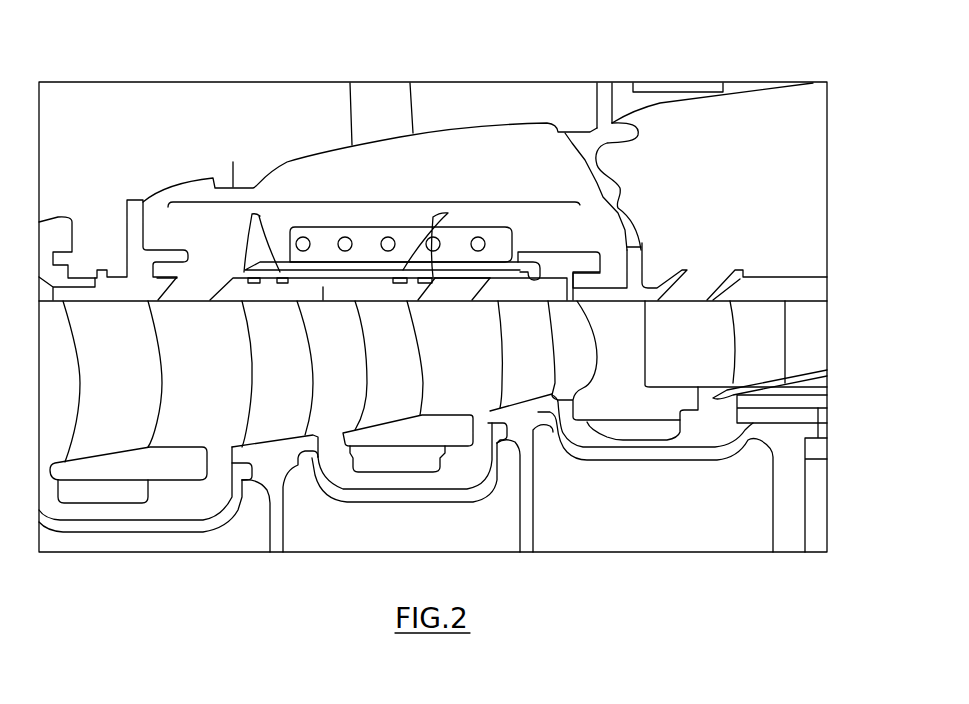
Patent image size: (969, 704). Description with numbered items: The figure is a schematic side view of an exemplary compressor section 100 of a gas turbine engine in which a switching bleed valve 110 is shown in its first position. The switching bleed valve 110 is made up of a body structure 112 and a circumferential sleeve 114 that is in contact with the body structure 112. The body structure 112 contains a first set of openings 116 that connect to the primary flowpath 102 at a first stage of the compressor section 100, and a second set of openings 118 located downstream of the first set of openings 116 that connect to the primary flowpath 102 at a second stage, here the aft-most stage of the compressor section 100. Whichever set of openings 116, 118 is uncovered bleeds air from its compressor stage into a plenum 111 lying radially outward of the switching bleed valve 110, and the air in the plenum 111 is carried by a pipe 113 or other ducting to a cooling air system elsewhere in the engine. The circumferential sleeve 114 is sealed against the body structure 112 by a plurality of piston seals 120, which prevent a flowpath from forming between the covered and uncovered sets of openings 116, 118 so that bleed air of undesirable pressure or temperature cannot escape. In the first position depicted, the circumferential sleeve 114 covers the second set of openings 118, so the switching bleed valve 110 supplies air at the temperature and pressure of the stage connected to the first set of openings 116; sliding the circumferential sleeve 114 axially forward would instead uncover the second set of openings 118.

The compressor section 100 is at (365, 64).
The primary flowpath 102 is at (222, 408).
The switching bleed valve 110 is at (362, 201).
The plenum 111 is at (502, 150).
The body structure 112 is at (141, 239).
The pipe 113 is at (391, 103).
The circumferential sleeve 114 is at (291, 270).
The first set of openings 116 is at (185, 287).
The second set of openings 118 is at (445, 287).
The piston seals 120 is at (252, 214).